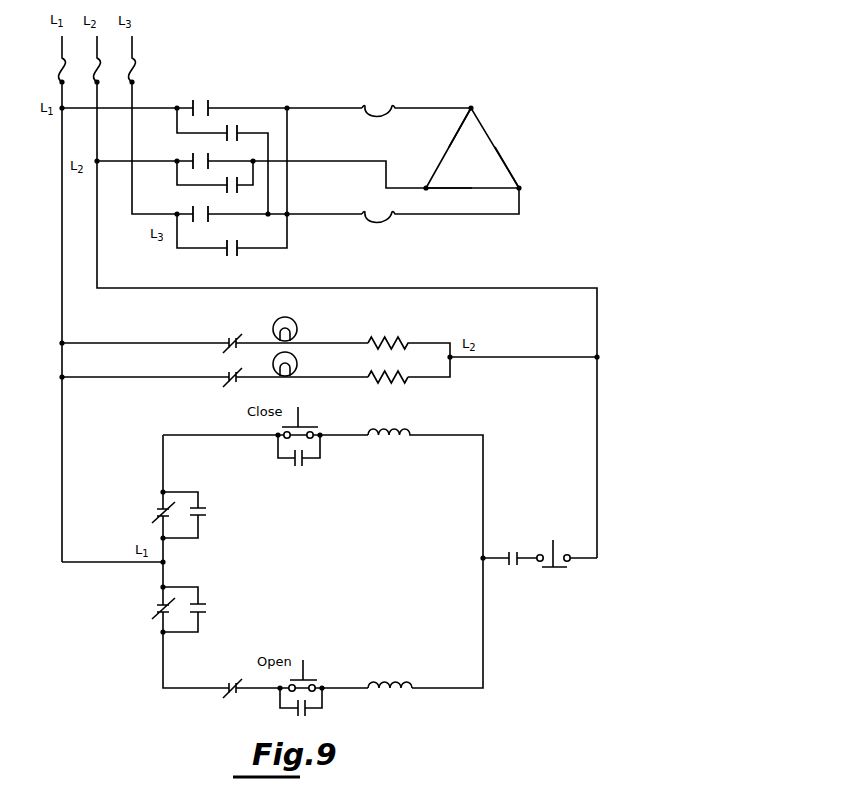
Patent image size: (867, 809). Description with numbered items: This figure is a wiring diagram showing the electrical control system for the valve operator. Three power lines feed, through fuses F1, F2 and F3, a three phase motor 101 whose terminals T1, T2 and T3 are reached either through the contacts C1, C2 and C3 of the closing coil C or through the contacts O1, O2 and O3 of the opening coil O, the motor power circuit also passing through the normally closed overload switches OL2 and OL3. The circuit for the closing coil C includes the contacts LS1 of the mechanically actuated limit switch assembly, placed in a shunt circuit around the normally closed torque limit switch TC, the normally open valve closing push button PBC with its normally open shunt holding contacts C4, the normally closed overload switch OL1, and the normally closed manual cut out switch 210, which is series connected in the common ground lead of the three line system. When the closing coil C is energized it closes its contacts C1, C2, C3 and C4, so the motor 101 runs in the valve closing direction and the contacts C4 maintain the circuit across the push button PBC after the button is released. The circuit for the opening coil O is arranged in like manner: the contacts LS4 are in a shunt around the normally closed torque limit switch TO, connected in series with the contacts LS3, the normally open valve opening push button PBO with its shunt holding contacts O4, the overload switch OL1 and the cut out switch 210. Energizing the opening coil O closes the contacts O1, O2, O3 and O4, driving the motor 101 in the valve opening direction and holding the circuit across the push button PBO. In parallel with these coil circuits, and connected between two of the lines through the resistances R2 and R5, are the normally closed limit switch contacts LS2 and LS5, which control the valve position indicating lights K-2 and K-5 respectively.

The motor 101 is at (497, 147).
The manual cut out switch 210 is at (563, 559).
The fuse F1 is at (52, 299).
The fuse F2 is at (334, 297).
The fuse F3 is at (141, 125).
The holding contact C1 is at (210, 101).
The holding contact C2 is at (260, 164).
The holding contact C3 is at (268, 207).
The holding contact O1 is at (222, 161).
The holding contact O2 is at (216, 183).
The holding contact O3 is at (232, 182).
The overload switch OL1 is at (510, 548).
The overload switch OL2 is at (440, 219).
The overload switch OL3 is at (416, 101).
The motor terminal T1 is at (470, 119).
The motor terminal T2 is at (437, 177).
The motor terminal T3 is at (513, 167).
The limit switch contacts LS1 is at (212, 514).
The limit switch contacts LS2 is at (216, 371).
The limit switch contacts LS3 is at (228, 699).
The limit switch contacts LS4 is at (214, 608).
The limit switch contacts LS5 is at (228, 335).
The valve position indicating light K-5 is at (297, 325).
The valve position indicating light K-2 is at (300, 364).
The resistance R5 is at (409, 346).
The resistance R2 is at (388, 368).
The valve closing push button PBC is at (305, 421).
The valve opening push button PBO is at (309, 672).
The shunt holding switch circuit contacts C4 is at (300, 458).
The shunt holding switch circuit contacts O4 is at (301, 710).
The torque limit switch TC is at (157, 515).
The torque limit switch TO is at (160, 609).
The closing coil C is at (425, 558).
The opening coil O is at (390, 674).